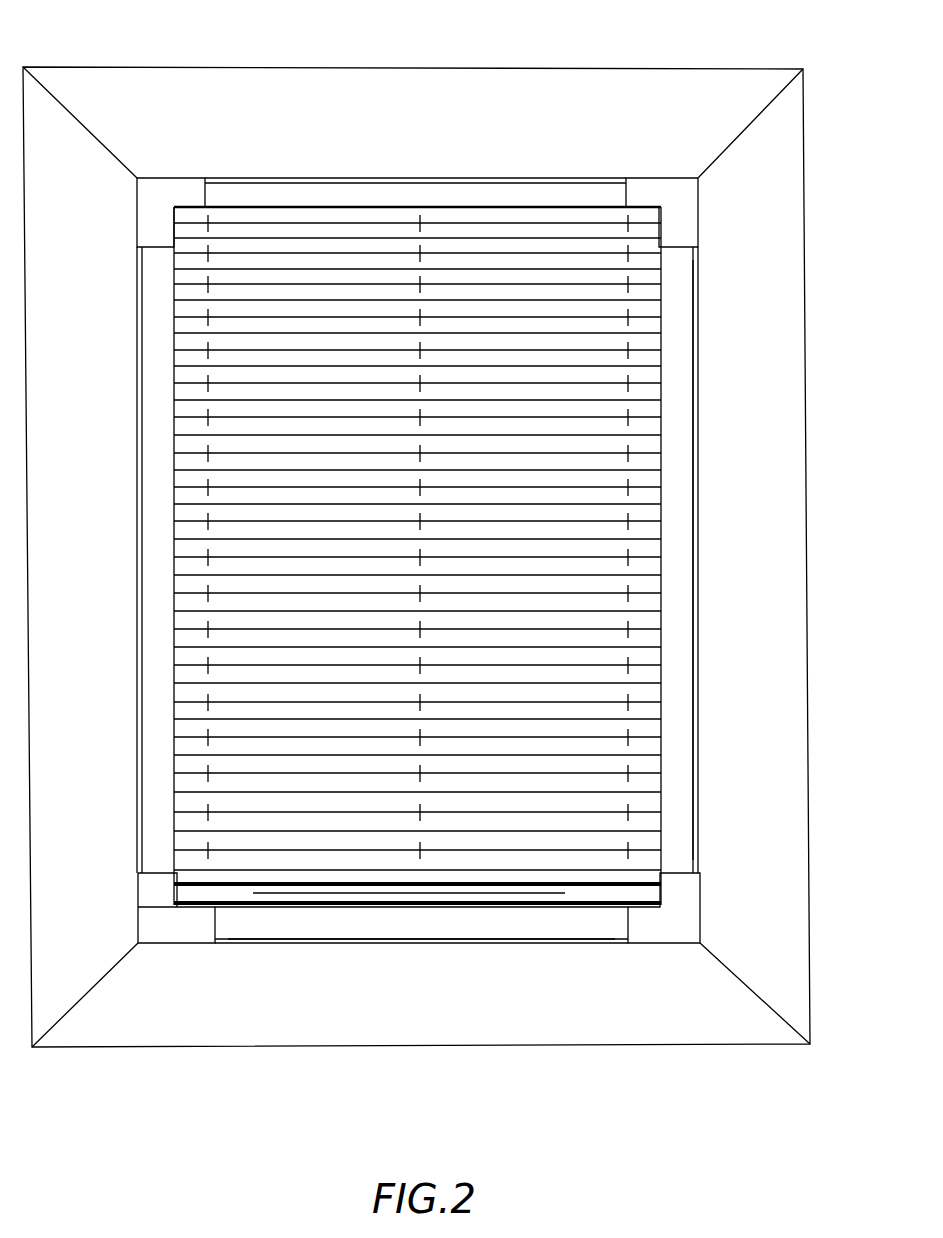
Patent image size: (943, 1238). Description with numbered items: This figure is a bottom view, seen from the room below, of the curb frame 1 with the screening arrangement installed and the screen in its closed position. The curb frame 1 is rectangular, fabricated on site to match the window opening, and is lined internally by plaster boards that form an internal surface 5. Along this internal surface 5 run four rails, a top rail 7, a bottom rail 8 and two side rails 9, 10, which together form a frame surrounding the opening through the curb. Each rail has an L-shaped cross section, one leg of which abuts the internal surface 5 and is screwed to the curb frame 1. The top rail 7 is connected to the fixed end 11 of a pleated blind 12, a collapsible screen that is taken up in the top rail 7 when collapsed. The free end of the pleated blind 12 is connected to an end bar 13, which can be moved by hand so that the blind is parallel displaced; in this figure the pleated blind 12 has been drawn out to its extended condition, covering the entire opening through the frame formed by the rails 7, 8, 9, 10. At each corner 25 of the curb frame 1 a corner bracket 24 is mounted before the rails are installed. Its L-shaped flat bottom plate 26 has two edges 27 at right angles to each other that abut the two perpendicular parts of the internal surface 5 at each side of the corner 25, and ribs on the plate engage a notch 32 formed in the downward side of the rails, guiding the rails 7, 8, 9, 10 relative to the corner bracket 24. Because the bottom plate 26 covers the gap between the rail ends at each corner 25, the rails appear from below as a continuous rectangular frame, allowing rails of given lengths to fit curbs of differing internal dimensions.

The curb frame 1 is at (619, 64).
The internal surface 5 is at (788, 216).
The top rail 7 is at (328, 192).
The bottom rail 8 is at (482, 927).
The side rail 9 is at (153, 522).
The side rail 10 is at (682, 352).
The fixed end 11 is at (492, 215).
The pleated blind 12 is at (605, 493).
The end bar 13 is at (642, 892).
The corner bracket 24 is at (143, 170).
The corner 25 is at (153, 923).
The bottom plate 26 is at (133, 229).
The edge 27 is at (180, 176).
The notch 32 is at (697, 632).